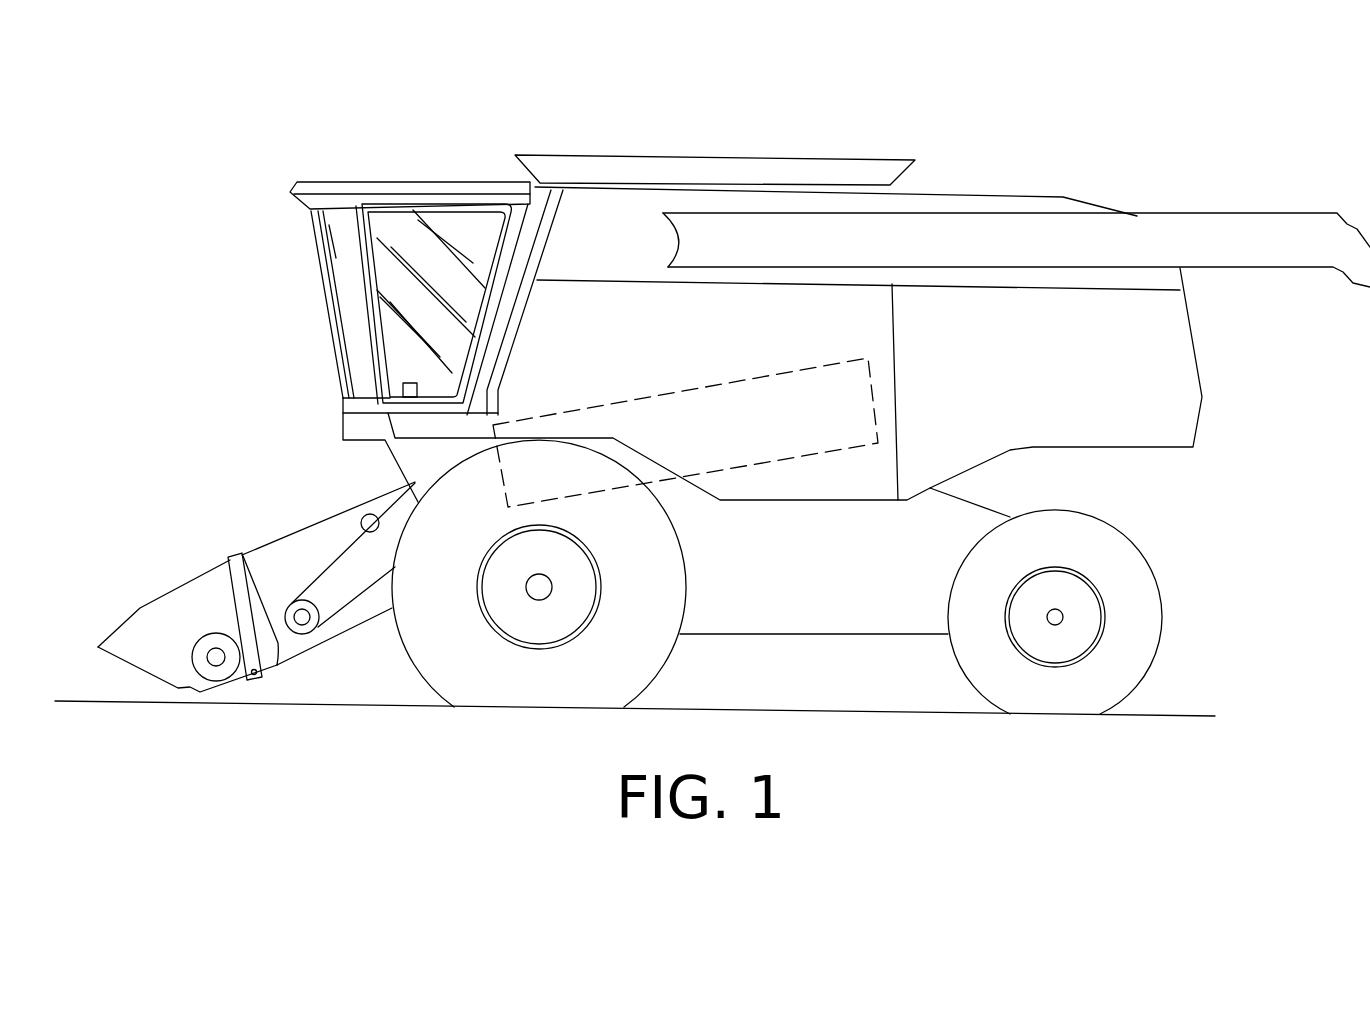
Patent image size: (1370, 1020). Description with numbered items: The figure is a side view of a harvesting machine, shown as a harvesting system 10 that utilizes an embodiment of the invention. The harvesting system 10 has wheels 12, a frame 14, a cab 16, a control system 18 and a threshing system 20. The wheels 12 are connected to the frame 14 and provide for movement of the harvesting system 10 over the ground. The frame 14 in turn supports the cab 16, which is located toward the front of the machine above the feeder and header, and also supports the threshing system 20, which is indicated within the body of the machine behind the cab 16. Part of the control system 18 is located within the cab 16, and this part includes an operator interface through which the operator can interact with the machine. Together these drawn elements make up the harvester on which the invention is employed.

The harvesting system 10 is at (1056, 131).
The wheels 12 is at (658, 673).
The frame 14 is at (858, 636).
The cab 16 is at (397, 162).
The control system 18 is at (402, 396).
The threshing system 20 is at (873, 390).